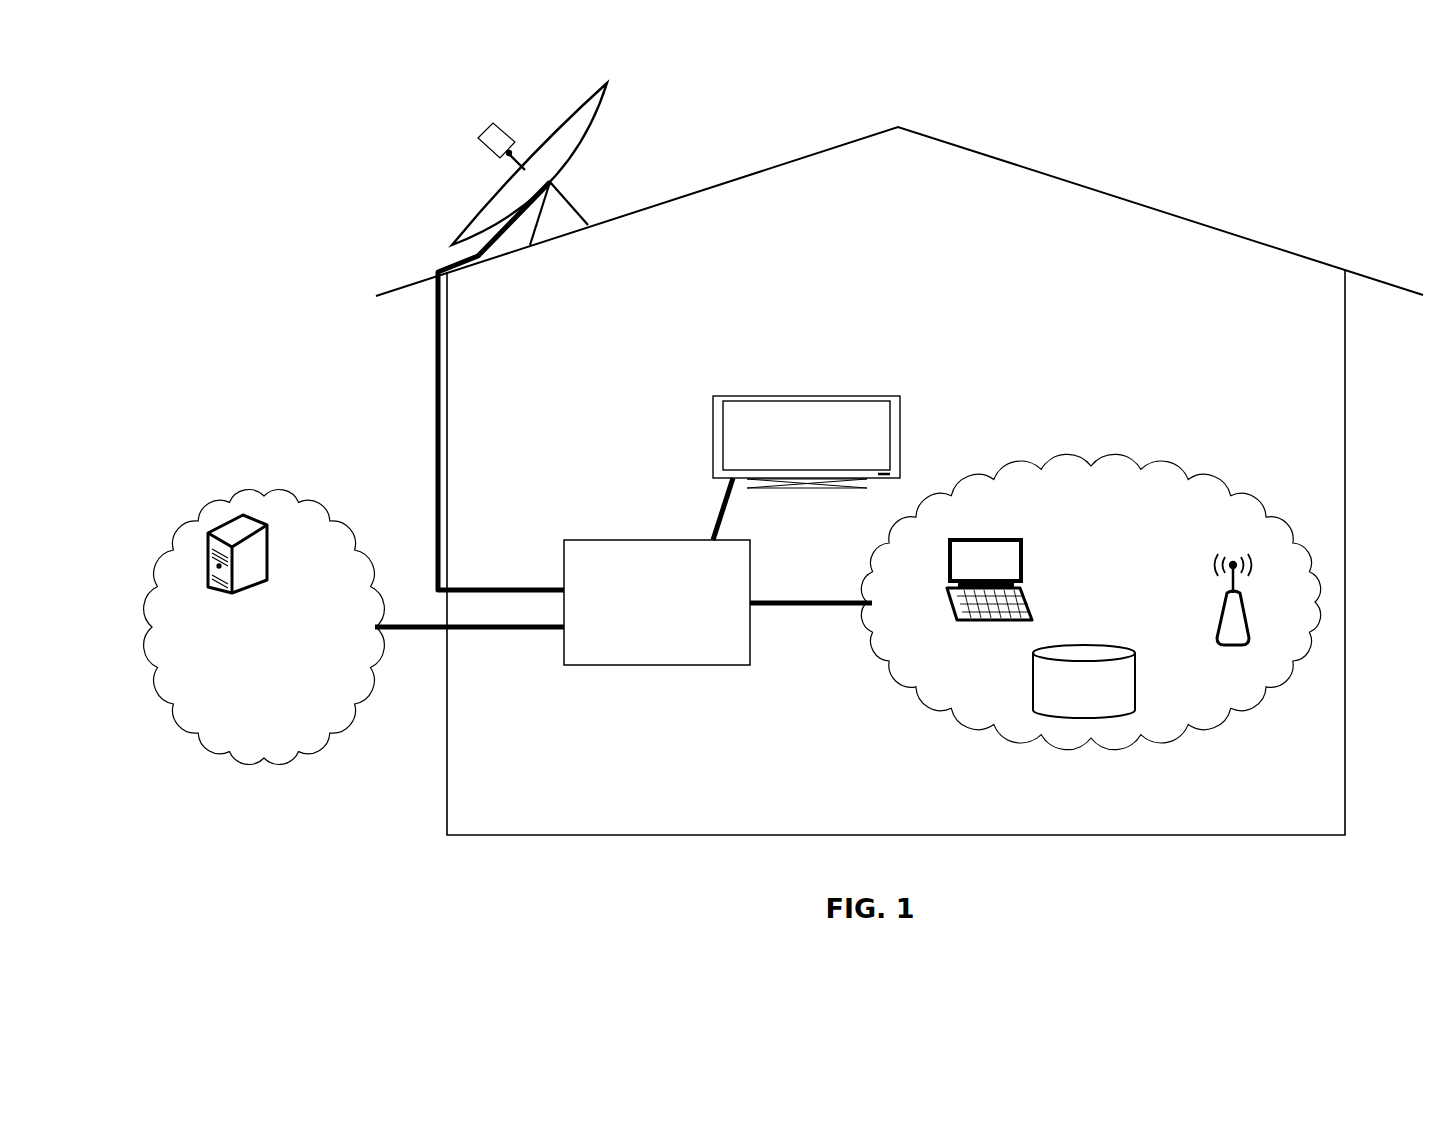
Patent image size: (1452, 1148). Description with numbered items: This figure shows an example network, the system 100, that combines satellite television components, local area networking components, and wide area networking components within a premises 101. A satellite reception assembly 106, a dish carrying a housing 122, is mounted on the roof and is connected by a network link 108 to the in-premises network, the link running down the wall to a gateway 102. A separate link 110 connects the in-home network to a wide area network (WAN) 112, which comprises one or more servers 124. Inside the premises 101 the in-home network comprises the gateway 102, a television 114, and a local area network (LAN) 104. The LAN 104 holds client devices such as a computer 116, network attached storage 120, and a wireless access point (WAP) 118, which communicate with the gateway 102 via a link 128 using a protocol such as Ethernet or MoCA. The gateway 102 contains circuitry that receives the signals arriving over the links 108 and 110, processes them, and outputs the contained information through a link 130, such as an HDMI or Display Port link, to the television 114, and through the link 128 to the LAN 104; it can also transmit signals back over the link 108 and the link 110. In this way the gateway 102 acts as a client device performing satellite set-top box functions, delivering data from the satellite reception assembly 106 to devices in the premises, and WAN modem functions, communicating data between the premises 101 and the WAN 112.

The system 100 is at (1170, 328).
The premises 101 is at (1114, 191).
The gateway 102 is at (640, 628).
The local area network (LAN) 104 is at (1071, 630).
The satellite reception assembly 106 is at (583, 108).
The network link 108 is at (436, 381).
The link 110 is at (413, 627).
The wide area network (WAN) 112 is at (247, 652).
The television 114 is at (732, 400).
The computer 116 is at (970, 538).
The wireless access point (WAP) 118 is at (1246, 618).
The network attached storage 120 is at (1067, 710).
The housing 122 is at (486, 131).
The servers 124 is at (268, 553).
The link 128 is at (806, 602).
The link 130 is at (722, 509).